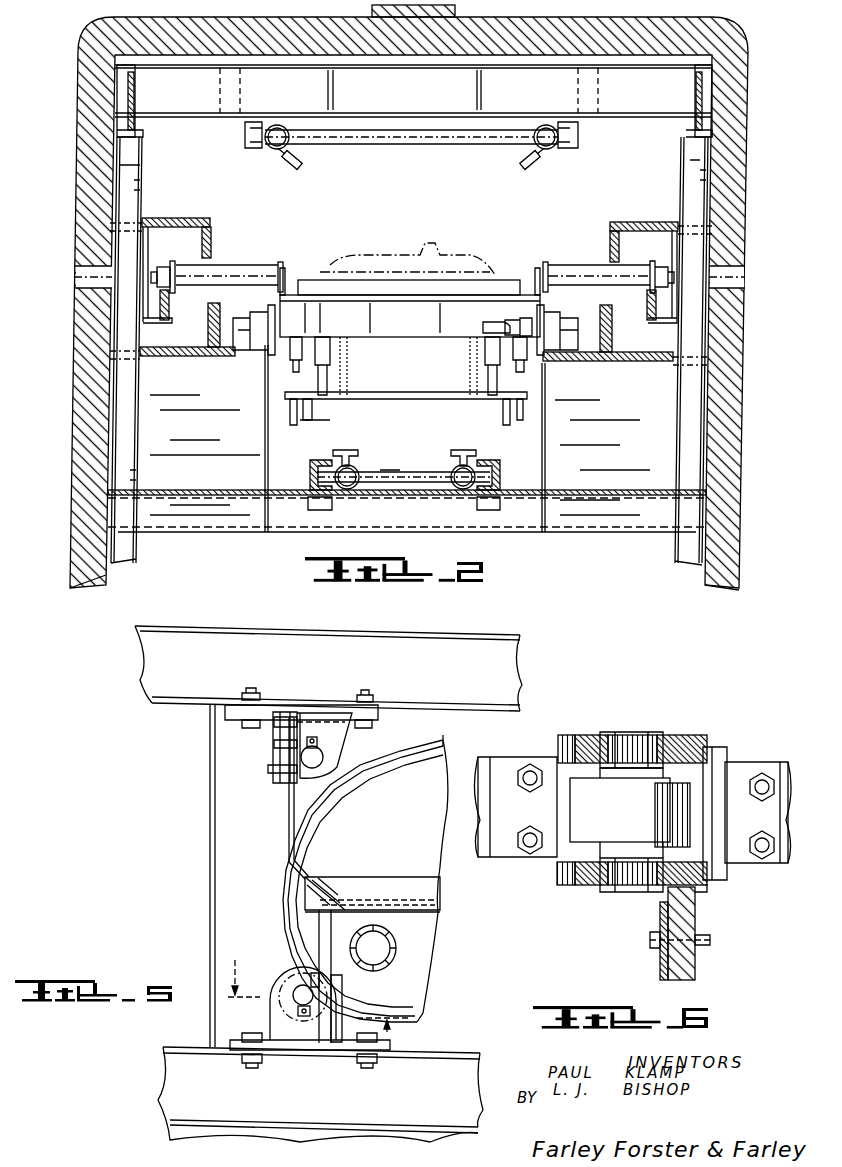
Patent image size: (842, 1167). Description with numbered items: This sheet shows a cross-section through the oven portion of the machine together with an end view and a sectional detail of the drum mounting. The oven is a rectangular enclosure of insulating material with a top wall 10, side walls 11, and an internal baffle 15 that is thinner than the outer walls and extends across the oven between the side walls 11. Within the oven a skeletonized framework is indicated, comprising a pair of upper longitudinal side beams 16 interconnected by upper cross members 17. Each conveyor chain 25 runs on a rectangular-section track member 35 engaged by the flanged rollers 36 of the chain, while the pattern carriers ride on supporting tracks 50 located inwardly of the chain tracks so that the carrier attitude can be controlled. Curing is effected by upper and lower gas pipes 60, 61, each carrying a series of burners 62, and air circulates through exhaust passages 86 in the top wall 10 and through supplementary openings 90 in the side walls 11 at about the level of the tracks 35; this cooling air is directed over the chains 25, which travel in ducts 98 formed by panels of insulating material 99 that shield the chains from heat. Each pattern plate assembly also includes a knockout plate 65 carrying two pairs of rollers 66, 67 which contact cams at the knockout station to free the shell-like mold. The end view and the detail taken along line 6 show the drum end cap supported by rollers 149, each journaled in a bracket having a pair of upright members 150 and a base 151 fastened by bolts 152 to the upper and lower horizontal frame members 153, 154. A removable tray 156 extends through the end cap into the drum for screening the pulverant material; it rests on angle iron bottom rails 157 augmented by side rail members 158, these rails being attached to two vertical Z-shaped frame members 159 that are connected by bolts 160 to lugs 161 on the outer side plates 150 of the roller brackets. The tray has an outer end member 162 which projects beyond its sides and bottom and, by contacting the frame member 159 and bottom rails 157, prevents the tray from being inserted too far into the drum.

In FIG. 5, the section line 6— 6 is at (319, 991).
In FIG. 2, the top wall 10 is at (246, 46).
In FIG. 2, the side walls 11 is at (86, 300).
In FIG. 2, the internal baffle 15 is at (407, 364).
In FIG. 2, the upper longitudinal side beams 16 is at (140, 125).
In FIG. 2, the upper cross members 17 is at (192, 113).
In FIG. 2, the conveyor chains 25 is at (200, 268).
In FIG. 2, the track member 35 is at (170, 300).
In FIG. 2, the flanged rollers 36 is at (167, 266).
In FIG. 2, the supporting tracks 50 is at (243, 358).
In FIG. 2, the upper gas pipe 60 is at (438, 138).
In FIG. 5, the upper gas pipe 60 is at (389, 960).
In FIG. 2, the lower gas pipe 61 is at (402, 476).
In FIG. 2, the burners 62 is at (296, 168).
In FIG. 2, the knockout plate 65 is at (418, 394).
In FIG. 2, the rollers 66 is at (312, 415).
In FIG. 2, the rollers 67 is at (294, 426).
In FIG. 2, the exhaust passages 86 is at (456, 16).
In FIG. 2, the supplementary openings 90 is at (80, 278).
In FIG. 2, the ducts 98 is at (199, 341).
In FIG. 2, the panels of insulating material 99 is at (172, 218).
In FIG. 5, the rollers 149 is at (318, 724).
In FIG. 6, the rollers 149 is at (642, 820).
In FIG. 5, the upright members 150 is at (310, 722).
In FIG. 6, the upright members 150 is at (688, 742).
In FIG. 5, the base 151 is at (380, 714).
In FIG. 6, the base 151 is at (550, 765).
In FIG. 5, the bolts 152 is at (372, 700).
In FIG. 6, the bolts 152 is at (762, 857).
In FIG. 5, the upper horizontal frame member 153 is at (514, 696).
In FIG. 5, the lower horizontal frame member 154 is at (470, 1120).
In FIG. 6, the lower horizontal frame member 154 is at (480, 858).
In FIG. 5, the removable tray 156 is at (398, 905).
In FIG. 5, the angle iron bottom rails 157 is at (330, 918).
In FIG. 5, the side rail members 158 is at (322, 895).
In FIG. 5, the Z-shaped frame members 159 is at (292, 810).
In FIG. 6, the Z-shaped frame members 159 is at (665, 960).
In FIG. 5, the bolts 160 is at (284, 774).
In FIG. 6, the bolts 160 is at (708, 947).
In FIG. 5, the lugs 161 is at (288, 750).
In FIG. 6, the lugs 161 is at (696, 975).
In FIG. 5, the outer end member 162 is at (362, 886).